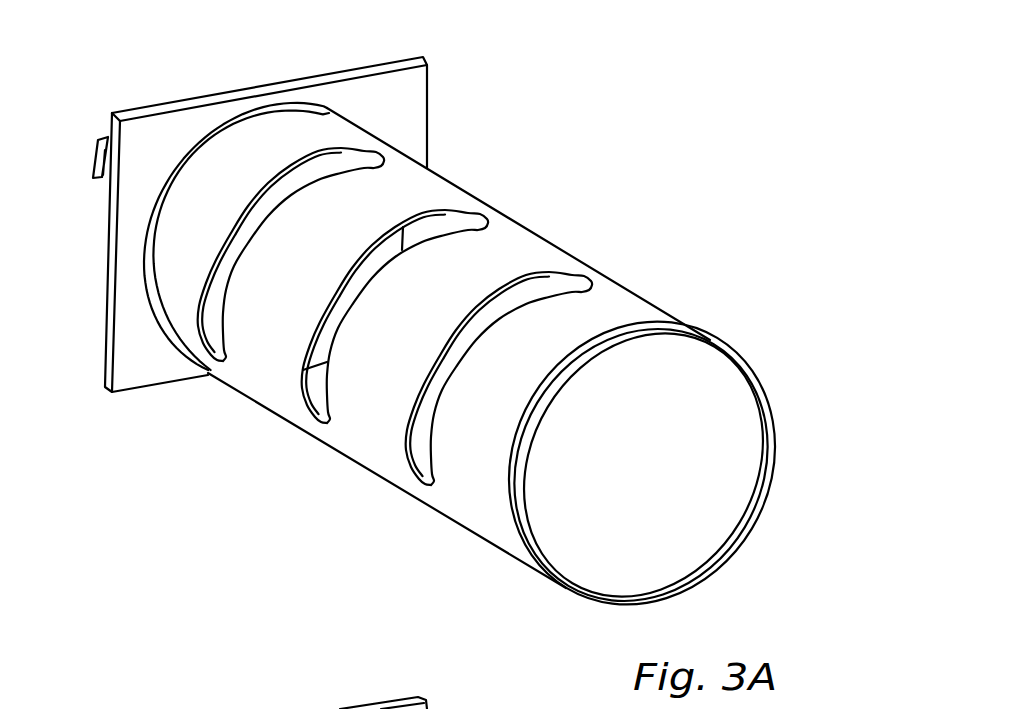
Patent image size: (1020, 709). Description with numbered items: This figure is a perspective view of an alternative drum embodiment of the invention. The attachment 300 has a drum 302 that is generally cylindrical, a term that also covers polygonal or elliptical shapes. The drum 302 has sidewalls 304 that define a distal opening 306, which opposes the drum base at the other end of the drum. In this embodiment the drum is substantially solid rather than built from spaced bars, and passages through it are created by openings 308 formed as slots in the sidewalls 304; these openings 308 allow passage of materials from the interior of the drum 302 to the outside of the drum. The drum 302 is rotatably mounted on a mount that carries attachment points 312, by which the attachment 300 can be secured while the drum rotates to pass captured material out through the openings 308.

The attachment 300 is at (602, 177).
The drum 302 is at (397, 98).
The sidewalls 304 is at (612, 300).
The distal opening 306 is at (662, 513).
The openings 308 is at (365, 160).
The attachment points 312 is at (93, 165).